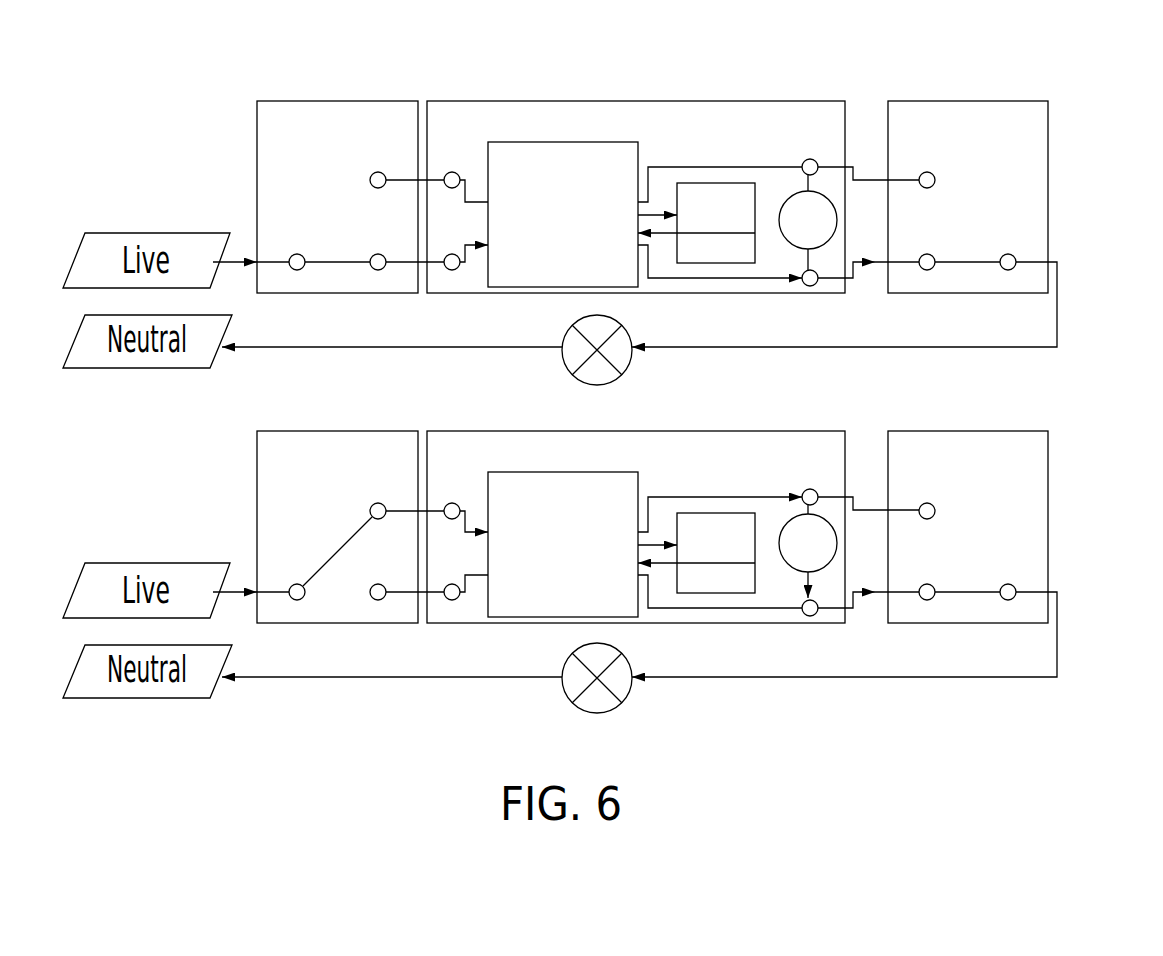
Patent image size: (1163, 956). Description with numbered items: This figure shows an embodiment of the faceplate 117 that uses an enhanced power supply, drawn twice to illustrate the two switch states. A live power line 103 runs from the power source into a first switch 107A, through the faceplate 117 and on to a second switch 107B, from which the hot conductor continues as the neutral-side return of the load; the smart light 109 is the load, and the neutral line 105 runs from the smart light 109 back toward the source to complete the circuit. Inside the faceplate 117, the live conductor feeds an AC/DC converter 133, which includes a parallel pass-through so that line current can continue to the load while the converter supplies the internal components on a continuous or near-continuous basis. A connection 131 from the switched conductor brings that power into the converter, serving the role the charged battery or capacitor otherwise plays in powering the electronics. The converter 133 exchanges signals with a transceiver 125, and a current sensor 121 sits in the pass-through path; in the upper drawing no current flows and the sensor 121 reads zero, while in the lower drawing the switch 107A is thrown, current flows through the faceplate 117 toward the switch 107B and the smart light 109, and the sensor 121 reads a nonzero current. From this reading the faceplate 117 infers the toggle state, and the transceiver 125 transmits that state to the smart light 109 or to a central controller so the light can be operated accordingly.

The live power line 103 is at (233, 259).
The neutral line 105 is at (1057, 314).
The switch 107A is at (347, 79).
The switch 107B is at (940, 80).
The smart light 109 is at (628, 323).
The faceplate 117 is at (632, 101).
The current sensor 121 is at (782, 238).
The transceiver 125 is at (715, 183).
The battery or capacitor 131 is at (488, 488).
The AC/DC converter 133 is at (553, 142).